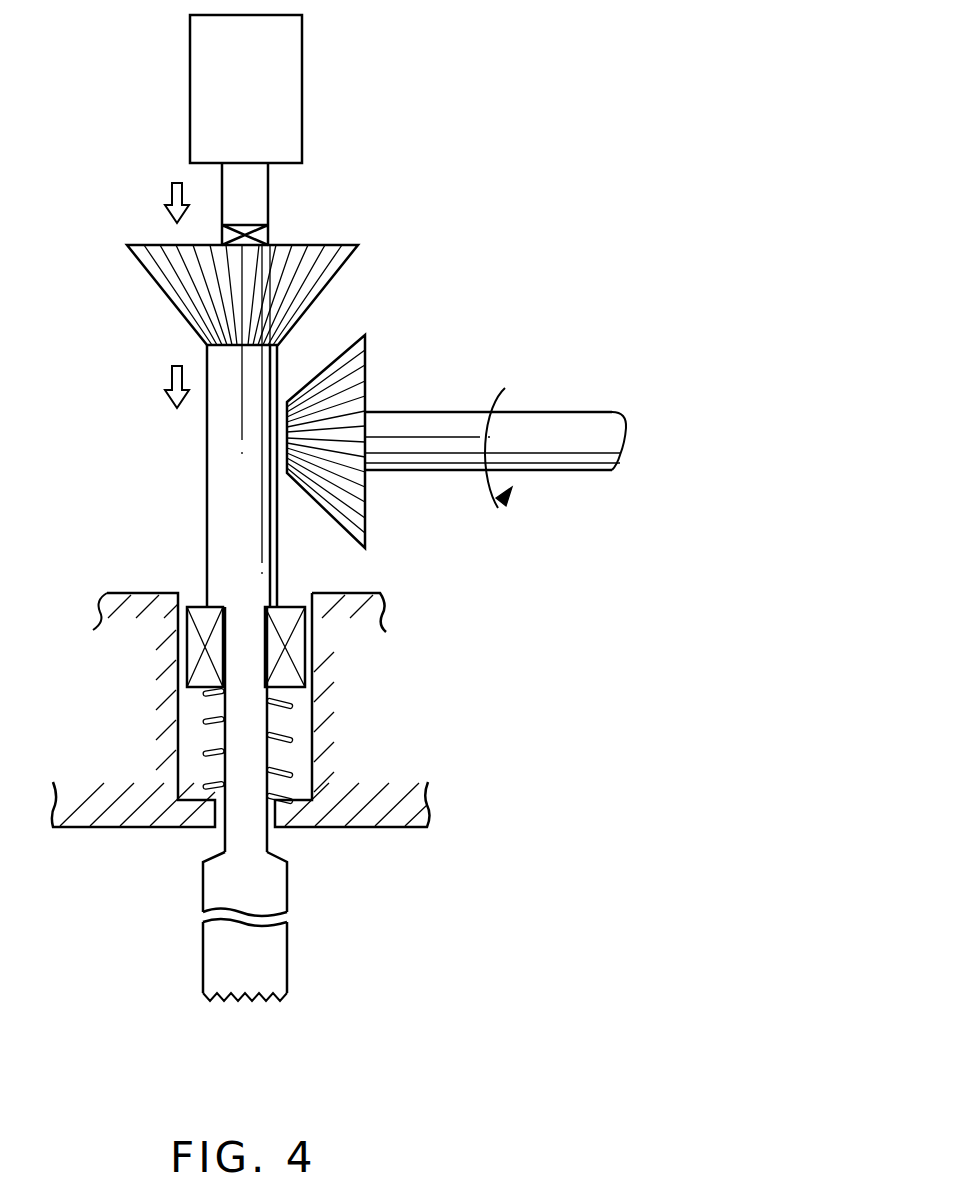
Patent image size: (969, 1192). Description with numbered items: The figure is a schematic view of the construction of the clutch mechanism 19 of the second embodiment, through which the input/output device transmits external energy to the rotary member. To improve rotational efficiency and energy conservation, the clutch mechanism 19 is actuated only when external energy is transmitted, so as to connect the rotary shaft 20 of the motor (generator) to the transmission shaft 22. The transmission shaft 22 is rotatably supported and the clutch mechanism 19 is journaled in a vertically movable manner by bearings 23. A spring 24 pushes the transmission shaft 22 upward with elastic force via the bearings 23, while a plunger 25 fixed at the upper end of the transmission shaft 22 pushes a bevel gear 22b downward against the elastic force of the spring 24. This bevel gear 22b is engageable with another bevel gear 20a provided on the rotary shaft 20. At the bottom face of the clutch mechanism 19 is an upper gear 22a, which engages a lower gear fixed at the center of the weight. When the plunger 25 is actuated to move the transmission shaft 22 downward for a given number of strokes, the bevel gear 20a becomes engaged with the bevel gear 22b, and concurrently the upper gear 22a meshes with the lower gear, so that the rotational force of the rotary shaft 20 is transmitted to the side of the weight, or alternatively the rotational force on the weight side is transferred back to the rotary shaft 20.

The clutch mechanism 19 is at (190, 425).
The rotary shaft 20 is at (572, 471).
The bevel gear 20a is at (367, 360).
The transmission shaft 22 is at (207, 515).
The upper gear 22a is at (262, 1000).
The bevel gear 22b is at (183, 302).
The bearings 23 is at (297, 643).
The spring 24 is at (287, 737).
The plunger 25 is at (262, 200).